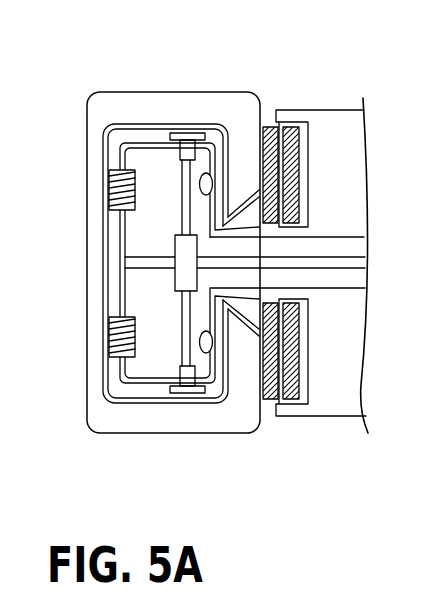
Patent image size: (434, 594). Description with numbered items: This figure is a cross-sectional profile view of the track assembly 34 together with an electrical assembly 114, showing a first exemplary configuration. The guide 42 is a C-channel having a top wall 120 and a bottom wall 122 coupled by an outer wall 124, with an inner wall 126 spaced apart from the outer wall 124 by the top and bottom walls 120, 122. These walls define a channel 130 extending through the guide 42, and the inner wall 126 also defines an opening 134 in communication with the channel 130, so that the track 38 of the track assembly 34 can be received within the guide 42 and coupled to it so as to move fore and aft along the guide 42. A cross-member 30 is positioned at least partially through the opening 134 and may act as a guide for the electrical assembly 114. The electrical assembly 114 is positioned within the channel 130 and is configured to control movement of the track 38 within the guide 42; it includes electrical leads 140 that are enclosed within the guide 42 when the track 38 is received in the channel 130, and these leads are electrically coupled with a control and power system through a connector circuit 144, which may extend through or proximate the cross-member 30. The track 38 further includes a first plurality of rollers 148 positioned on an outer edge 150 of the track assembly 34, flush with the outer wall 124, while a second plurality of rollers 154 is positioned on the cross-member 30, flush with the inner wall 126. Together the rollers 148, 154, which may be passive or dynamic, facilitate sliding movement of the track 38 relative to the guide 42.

The cross-member 30 is at (347, 108).
The track assembly 34 is at (314, 97).
The track 38 is at (198, 358).
The guide 42 is at (100, 116).
The electrical assembly 114 is at (258, 252).
The top wall 120 is at (157, 107).
The bottom wall 122 is at (168, 417).
The outer wall 124 is at (94, 255).
The inner wall 126 is at (243, 143).
The channel 130 is at (98, 391).
The opening 134 is at (262, 304).
The electrical leads 140 is at (185, 136).
The connector circuit 144 is at (306, 269).
The first plurality of rollers 148 is at (112, 185).
The outer edge 150 is at (108, 230).
The second plurality of rollers 154 is at (268, 127).